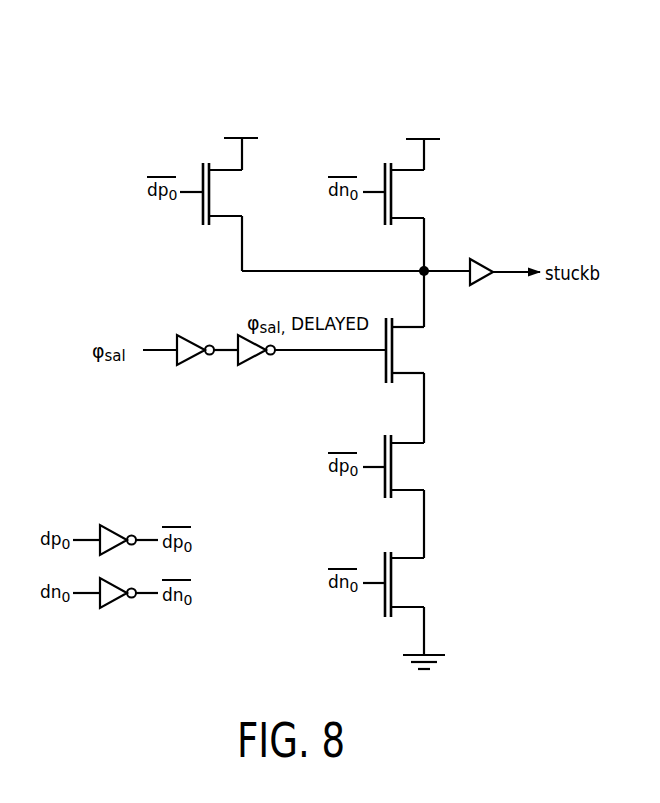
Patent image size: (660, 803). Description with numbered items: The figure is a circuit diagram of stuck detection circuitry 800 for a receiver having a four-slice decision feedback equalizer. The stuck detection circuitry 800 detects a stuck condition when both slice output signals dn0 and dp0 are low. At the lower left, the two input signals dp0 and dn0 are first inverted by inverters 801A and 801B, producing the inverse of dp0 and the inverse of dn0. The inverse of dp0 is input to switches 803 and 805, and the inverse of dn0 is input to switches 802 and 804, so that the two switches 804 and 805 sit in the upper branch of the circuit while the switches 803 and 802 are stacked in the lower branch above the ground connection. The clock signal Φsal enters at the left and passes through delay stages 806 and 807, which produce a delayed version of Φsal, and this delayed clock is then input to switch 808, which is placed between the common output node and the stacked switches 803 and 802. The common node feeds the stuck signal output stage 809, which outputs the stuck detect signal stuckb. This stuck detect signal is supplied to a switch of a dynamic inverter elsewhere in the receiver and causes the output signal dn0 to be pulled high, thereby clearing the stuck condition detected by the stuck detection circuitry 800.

The stuck detection circuitry 800 is at (601, 102).
The inverter 801A is at (110, 528).
The inverter 801B is at (108, 606).
The switch 802 is at (411, 585).
The switch 803 is at (411, 471).
The switch 804 is at (410, 197).
The switch 805 is at (229, 196).
The delay stage 806 is at (193, 336).
The delay stage 807 is at (247, 363).
The switch 808 is at (412, 354).
The stuck signal output stage 809 is at (483, 283).